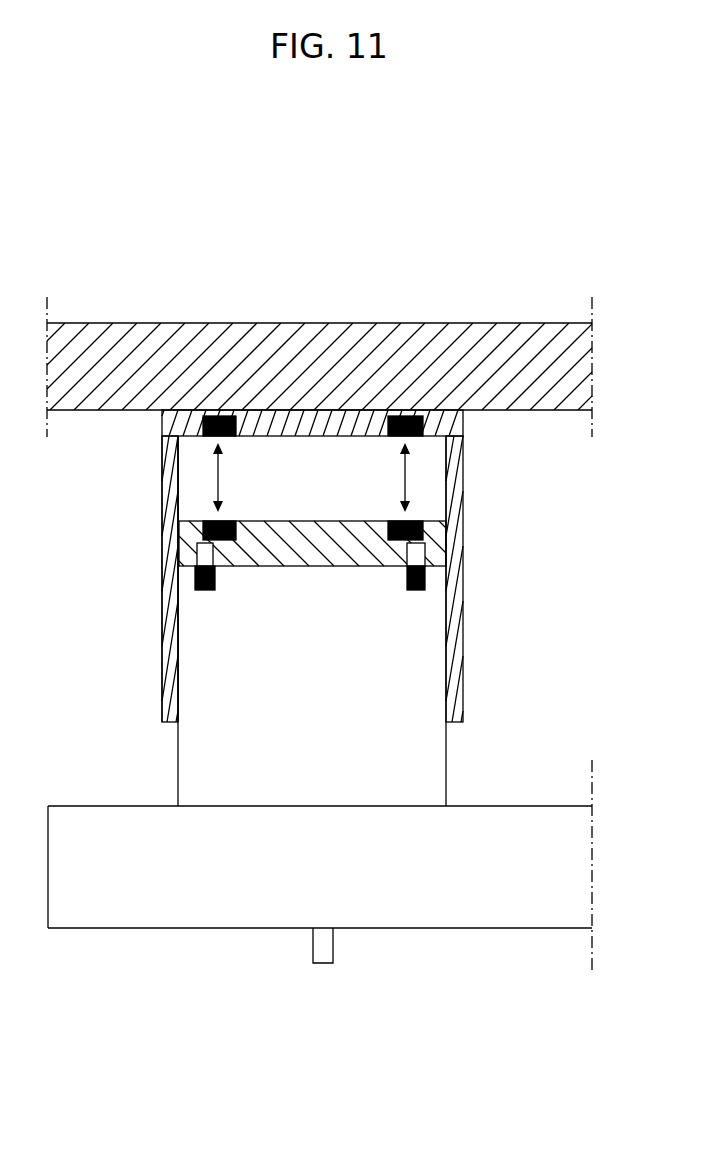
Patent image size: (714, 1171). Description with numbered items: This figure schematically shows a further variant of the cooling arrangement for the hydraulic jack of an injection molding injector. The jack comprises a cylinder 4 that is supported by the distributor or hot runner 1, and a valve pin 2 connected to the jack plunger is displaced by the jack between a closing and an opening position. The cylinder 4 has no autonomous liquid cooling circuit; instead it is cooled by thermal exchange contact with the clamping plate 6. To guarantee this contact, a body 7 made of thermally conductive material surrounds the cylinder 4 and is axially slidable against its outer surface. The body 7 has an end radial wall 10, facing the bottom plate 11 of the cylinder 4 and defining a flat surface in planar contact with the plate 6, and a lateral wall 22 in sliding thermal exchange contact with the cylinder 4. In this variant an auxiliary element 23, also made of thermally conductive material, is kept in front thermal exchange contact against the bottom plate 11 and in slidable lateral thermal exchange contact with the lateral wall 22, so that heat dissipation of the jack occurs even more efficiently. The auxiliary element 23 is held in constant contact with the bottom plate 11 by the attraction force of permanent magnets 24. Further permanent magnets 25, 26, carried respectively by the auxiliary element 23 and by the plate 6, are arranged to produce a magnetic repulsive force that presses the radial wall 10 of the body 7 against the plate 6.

The distributor or hot runner 1 is at (100, 835).
The valve pin 2 is at (313, 950).
The cylinder 4 is at (430, 740).
The clamping plate 6 is at (322, 340).
The body made of thermally conductive material 7 is at (478, 509).
The end radial wall 10 is at (185, 419).
The bottom plate 11 is at (303, 550).
The lateral wall 22 is at (168, 628).
The auxiliary element 23 is at (358, 550).
The permanent magnets 24 is at (214, 592).
The permanent magnets 25 is at (228, 520).
The permanent magnets 26 is at (228, 437).